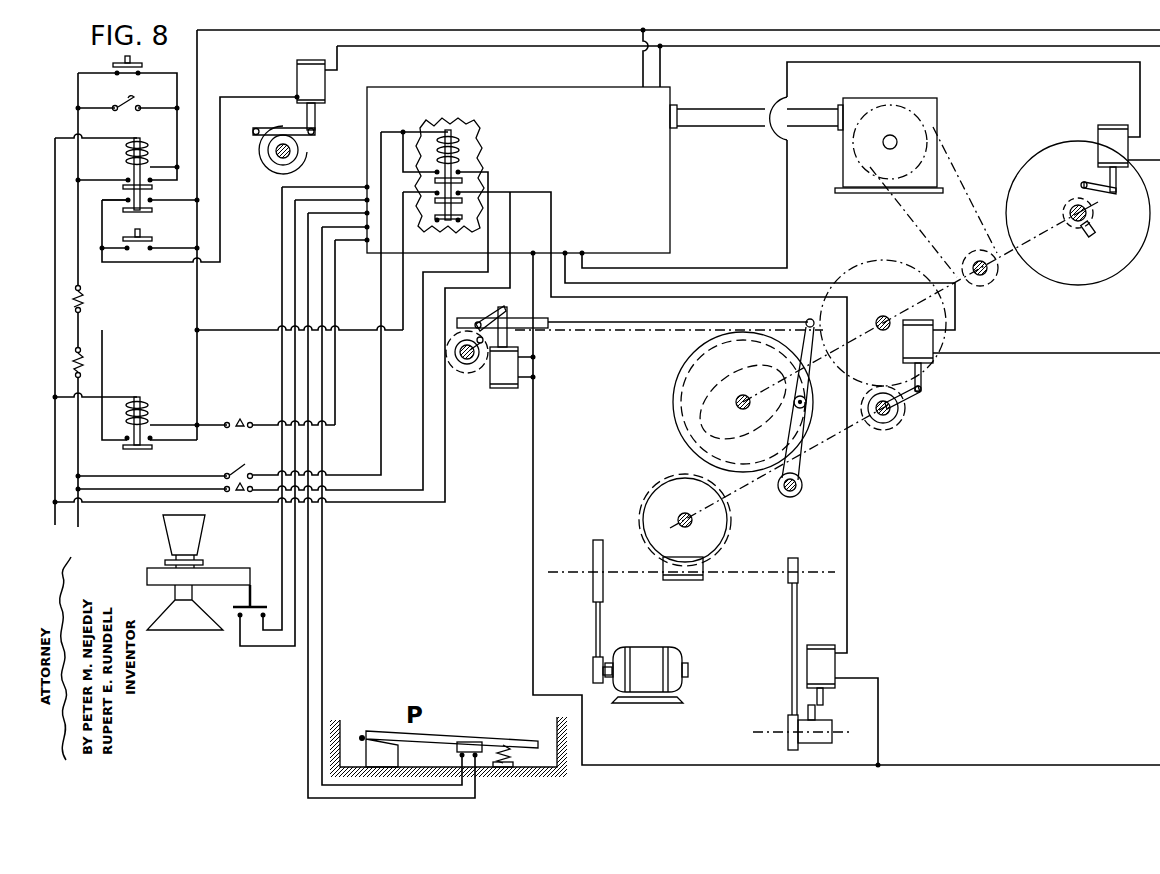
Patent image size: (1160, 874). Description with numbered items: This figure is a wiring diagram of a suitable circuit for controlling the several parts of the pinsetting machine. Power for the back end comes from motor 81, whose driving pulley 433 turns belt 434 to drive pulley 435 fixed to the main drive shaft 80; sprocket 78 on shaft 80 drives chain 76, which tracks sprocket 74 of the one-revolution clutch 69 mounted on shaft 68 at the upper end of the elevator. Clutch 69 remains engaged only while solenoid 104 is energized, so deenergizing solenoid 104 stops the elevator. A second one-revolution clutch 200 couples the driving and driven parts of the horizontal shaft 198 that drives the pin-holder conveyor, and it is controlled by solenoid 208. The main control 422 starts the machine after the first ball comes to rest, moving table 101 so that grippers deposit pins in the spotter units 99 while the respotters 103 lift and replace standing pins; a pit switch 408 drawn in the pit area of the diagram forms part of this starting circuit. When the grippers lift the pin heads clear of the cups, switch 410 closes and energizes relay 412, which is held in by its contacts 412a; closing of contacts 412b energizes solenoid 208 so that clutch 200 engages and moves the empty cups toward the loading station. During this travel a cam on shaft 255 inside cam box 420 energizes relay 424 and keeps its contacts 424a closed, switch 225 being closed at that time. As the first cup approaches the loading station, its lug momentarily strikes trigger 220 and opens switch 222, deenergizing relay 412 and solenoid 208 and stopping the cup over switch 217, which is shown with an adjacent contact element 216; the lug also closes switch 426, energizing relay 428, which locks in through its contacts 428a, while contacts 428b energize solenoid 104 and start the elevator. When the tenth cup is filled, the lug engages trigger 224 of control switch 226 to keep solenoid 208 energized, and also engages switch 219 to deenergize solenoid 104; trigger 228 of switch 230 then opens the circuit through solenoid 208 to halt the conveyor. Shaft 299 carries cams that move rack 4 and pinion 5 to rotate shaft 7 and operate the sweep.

The switch 410 is at (110, 69).
The control switch 226 is at (112, 102).
The trigger 224 is at (136, 103).
The relay 412 is at (152, 152).
The contacts 412a is at (128, 180).
The contacts 412b is at (126, 201).
The switch 216 is at (143, 239).
The switch 217 is at (165, 210).
The solenoid 208 is at (307, 73).
The one-revolution clutch 200 is at (268, 178).
The horizontal shaft 198 is at (290, 153).
The switch 222 is at (84, 294).
The trigger 220 is at (81, 307).
The switch 230 is at (84, 357).
The trigger 228 is at (81, 368).
The relay 424 is at (140, 406).
The contacts 424a is at (170, 466).
The switch 225 is at (245, 410).
The switch 426 is at (252, 462).
The switch 219 is at (237, 492).
The spotter units 99 is at (170, 528).
The table 101 is at (147, 577).
The respotters 103 is at (193, 623).
The relay 428 is at (456, 136).
The contacts 428a is at (460, 173).
The contacts 428b is at (460, 193).
The main control 422 is at (672, 200).
The shaft 255 is at (890, 135).
The cam box 420 is at (930, 113).
The shaft 299 is at (1033, 245).
The rack 4 is at (462, 320).
The pinion 5 is at (458, 364).
The shaft 7 is at (472, 362).
The pulley 435 is at (595, 543).
The belt 434 is at (599, 634).
The driving pulley 433 is at (592, 668).
The motor 81 is at (645, 682).
The sprocket 78 is at (797, 558).
The main drive shaft 80 is at (768, 572).
The chain 76 is at (788, 628).
The sprocket 74 is at (787, 738).
The shaft 68 is at (767, 730).
The clutch 69 is at (813, 748).
The solenoid 104 is at (822, 672).
The pedal switch 408 is at (470, 754).